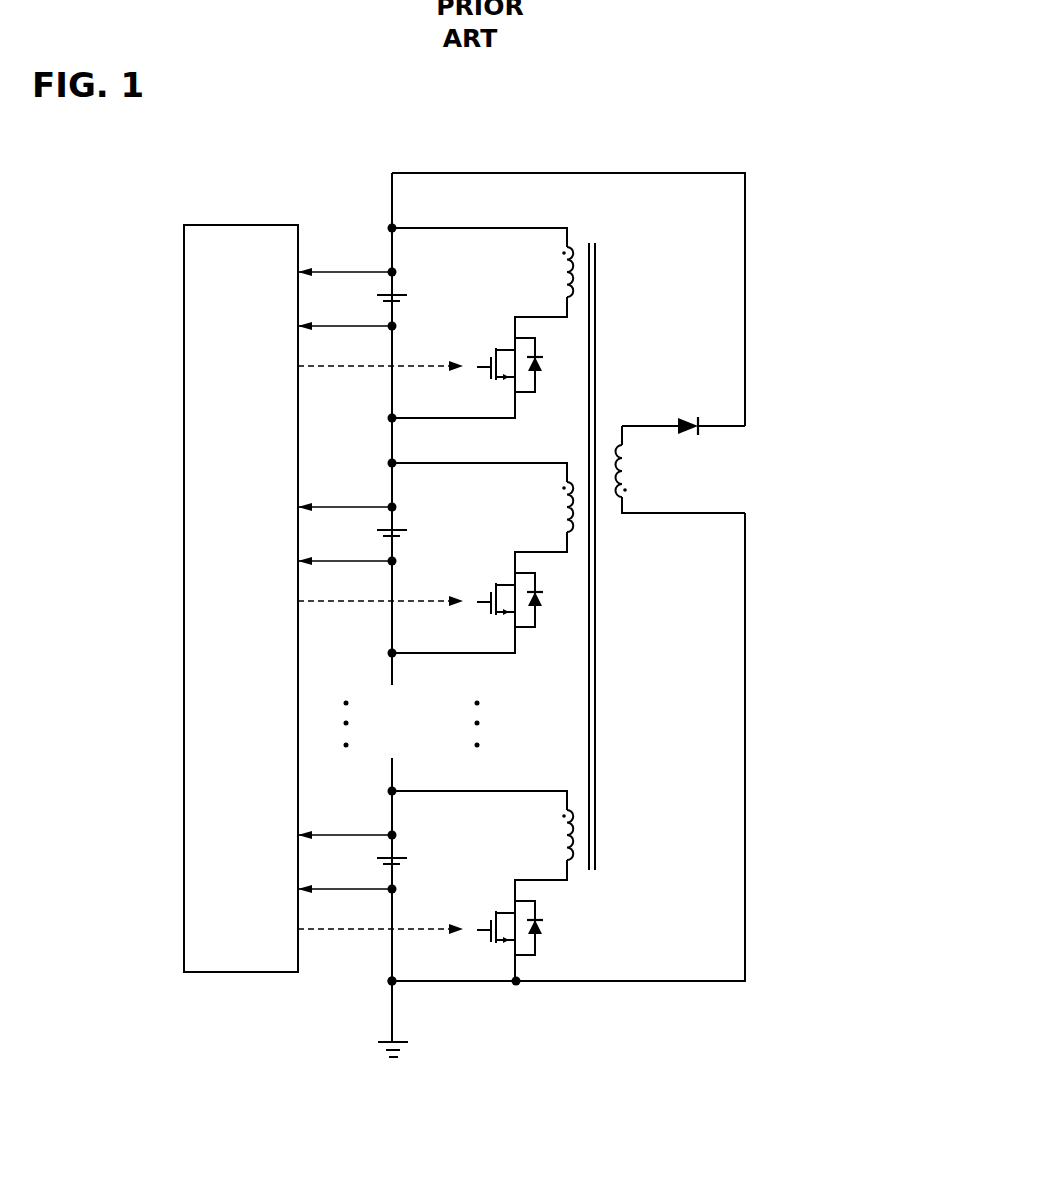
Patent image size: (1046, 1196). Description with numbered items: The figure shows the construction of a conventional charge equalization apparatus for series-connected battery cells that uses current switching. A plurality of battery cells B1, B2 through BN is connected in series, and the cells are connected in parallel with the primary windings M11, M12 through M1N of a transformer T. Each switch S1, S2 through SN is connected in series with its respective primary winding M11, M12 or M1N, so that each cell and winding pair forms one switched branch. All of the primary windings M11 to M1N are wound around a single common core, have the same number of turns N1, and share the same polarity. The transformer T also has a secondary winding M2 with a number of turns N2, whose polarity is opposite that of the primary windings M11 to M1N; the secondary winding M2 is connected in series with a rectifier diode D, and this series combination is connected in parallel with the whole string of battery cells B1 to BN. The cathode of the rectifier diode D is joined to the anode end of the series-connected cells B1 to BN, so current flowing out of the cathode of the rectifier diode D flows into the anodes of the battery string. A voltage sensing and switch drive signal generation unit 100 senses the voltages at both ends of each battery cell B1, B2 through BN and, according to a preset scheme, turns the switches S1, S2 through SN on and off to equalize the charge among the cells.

The voltage sensing and switch drive signal generation unit 100 is at (184, 472).
The battery cell B1 is at (352, 299).
The battery cell B2 is at (352, 534).
The battery cell BN is at (352, 862).
The primary winding M11 is at (481, 323).
The primary winding M12 is at (481, 558).
The primary winding M1N is at (481, 886).
The primary winding turns N1 is at (551, 272).
The secondary winding M2 is at (680, 469).
The secondary winding turns N2 is at (659, 471).
The switch S1 is at (437, 365).
The switch S2 is at (437, 600).
The switch SN is at (440, 928).
The transformer T is at (592, 541).
The rectifier diode D is at (711, 409).